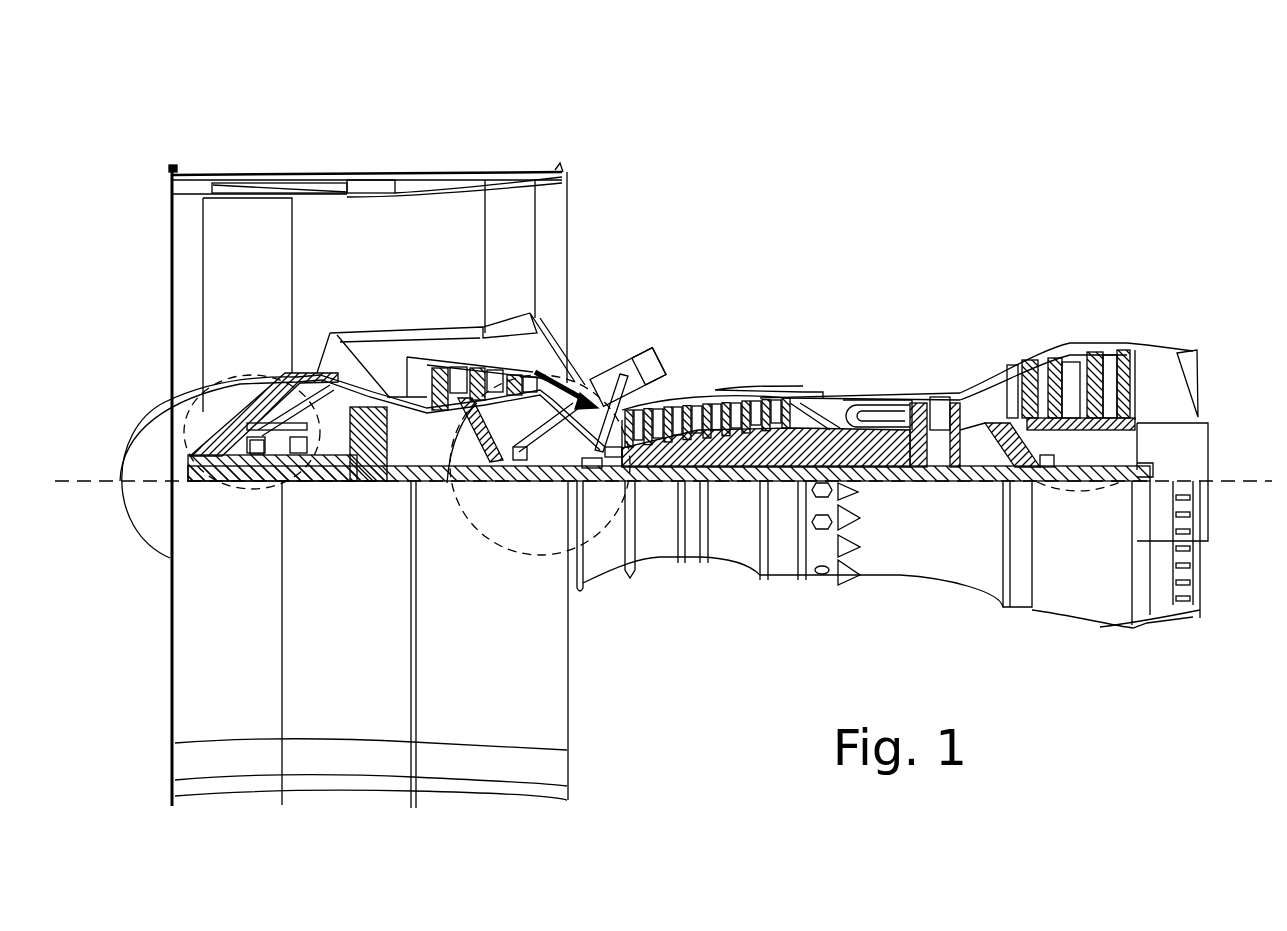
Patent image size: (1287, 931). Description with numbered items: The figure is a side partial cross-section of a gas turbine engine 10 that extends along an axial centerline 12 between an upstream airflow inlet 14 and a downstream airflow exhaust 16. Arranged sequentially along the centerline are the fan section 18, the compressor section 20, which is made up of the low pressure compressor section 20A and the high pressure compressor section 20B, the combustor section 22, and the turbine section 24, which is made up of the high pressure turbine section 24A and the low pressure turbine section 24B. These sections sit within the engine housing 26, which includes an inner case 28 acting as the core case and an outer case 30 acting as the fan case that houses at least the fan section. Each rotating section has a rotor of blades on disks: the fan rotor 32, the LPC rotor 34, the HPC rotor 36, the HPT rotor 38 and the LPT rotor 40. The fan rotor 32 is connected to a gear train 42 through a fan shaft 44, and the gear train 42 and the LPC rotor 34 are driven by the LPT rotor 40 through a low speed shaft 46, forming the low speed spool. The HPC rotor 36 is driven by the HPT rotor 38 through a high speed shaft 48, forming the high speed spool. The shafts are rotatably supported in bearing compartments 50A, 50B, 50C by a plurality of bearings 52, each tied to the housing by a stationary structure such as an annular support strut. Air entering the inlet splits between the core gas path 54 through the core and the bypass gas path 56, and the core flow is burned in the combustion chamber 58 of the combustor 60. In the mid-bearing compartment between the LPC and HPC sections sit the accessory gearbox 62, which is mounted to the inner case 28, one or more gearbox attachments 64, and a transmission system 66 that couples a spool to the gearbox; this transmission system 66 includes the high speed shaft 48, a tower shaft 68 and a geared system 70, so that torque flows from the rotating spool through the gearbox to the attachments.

The gas turbine engine 10 is at (1140, 130).
The axial centerline 12 is at (1258, 481).
The upstream airflow inlet 14 is at (172, 266).
The downstream airflow exhaust 16 is at (1205, 380).
The fan section 18 is at (167, 142).
The compressor section 20 is at (770, 83).
The low pressure compressor section 20A is at (567, 308).
The high pressure compressor section 20B is at (608, 278).
The combustor section 22 is at (905, 278).
The turbine section 24 is at (1152, 193).
The high pressure turbine section 24A is at (905, 278).
The low pressure turbine section 24B is at (1000, 278).
The engine housing 26 is at (580, 586).
The inner case 28 is at (783, 575).
The outer case 30 is at (484, 800).
The fan rotor 32 is at (175, 401).
The LPC rotor 34 is at (447, 483).
The HPC rotor 36 is at (733, 482).
The HPT rotor 38 is at (948, 482).
The LPT rotor 40 is at (1100, 447).
The gear train 42 is at (370, 485).
The fan shaft 44 is at (236, 485).
The low speed shaft 46 is at (1095, 490).
The high speed shaft 48 is at (880, 482).
The bearing compartment 50A is at (233, 377).
The bearing compartment 50B is at (560, 370).
The bearing compartment 50C is at (1103, 490).
The bearings 52 is at (268, 483).
The core gas path 54 is at (370, 367).
The bypass gas path 56 is at (380, 253).
The combustion chamber 58 is at (868, 400).
The combustor 60 is at (870, 395).
The accessory gearbox 62 is at (622, 368).
The gearbox attachments 64 is at (652, 372).
The transmission system 66 is at (583, 340).
The tower shaft 68 is at (642, 405).
The geared system 70 is at (575, 490).